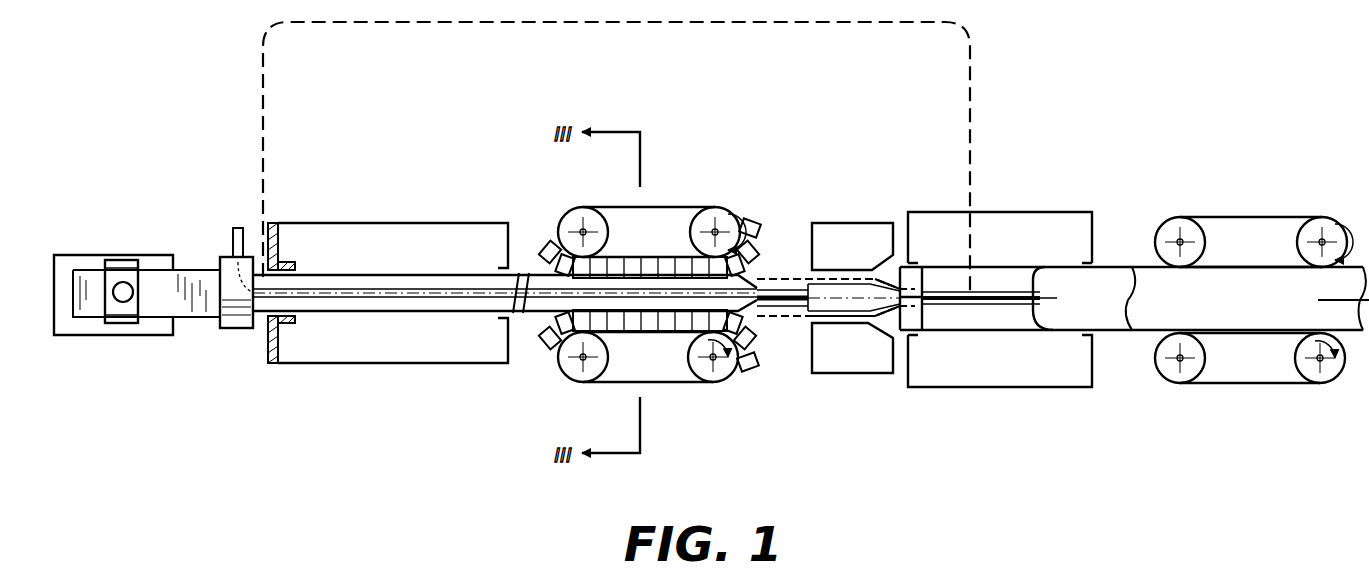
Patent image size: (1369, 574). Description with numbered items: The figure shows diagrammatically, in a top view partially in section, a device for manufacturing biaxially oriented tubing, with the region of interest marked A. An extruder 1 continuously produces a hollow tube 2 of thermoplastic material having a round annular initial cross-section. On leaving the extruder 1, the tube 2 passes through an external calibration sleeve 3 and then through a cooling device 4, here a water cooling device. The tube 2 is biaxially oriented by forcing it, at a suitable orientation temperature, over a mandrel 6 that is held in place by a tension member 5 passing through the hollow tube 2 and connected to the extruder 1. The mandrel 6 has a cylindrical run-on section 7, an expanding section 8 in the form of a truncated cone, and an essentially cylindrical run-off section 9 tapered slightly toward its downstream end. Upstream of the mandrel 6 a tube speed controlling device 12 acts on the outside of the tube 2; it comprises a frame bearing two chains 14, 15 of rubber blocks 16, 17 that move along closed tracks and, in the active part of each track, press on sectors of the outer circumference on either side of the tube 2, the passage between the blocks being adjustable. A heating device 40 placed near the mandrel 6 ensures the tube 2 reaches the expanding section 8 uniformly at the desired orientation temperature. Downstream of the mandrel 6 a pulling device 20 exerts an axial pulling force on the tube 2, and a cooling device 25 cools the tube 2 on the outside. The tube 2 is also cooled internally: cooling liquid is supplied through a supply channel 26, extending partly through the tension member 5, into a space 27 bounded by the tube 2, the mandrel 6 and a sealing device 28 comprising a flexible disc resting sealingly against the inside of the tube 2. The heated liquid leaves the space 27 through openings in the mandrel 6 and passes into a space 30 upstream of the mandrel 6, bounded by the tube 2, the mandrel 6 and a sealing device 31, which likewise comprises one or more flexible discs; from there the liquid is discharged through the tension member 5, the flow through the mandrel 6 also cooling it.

The extruder 1 is at (122, 255).
The supply channel 26 is at (236, 245).
The external calibration sleeve 3 is at (270, 335).
The cooling device 4 is at (428, 223).
The tension member 5 is at (398, 316).
The sealing device 31 is at (517, 322).
The hollow tube 2 is at (750, 280).
The tube speed controlling device 12 is at (673, 142).
The chain 14 is at (667, 207).
The chain 15 is at (662, 383).
The rubber blocks 16 is at (748, 224).
The rubber blocks 17 is at (745, 372).
The space 30 is at (782, 305).
The cylindrical run-on section 7 is at (843, 290).
The expanding section 8 is at (885, 290).
The mandrel 6 is at (818, 322).
The heating device 40 is at (872, 374).
The run-off section 9 is at (915, 283).
The cooling device 25 is at (1028, 212).
The space 27 is at (1000, 316).
The sealing device 28 is at (1045, 322).
The pulling device 20 is at (1250, 212).
The processing region A is at (971, 120).